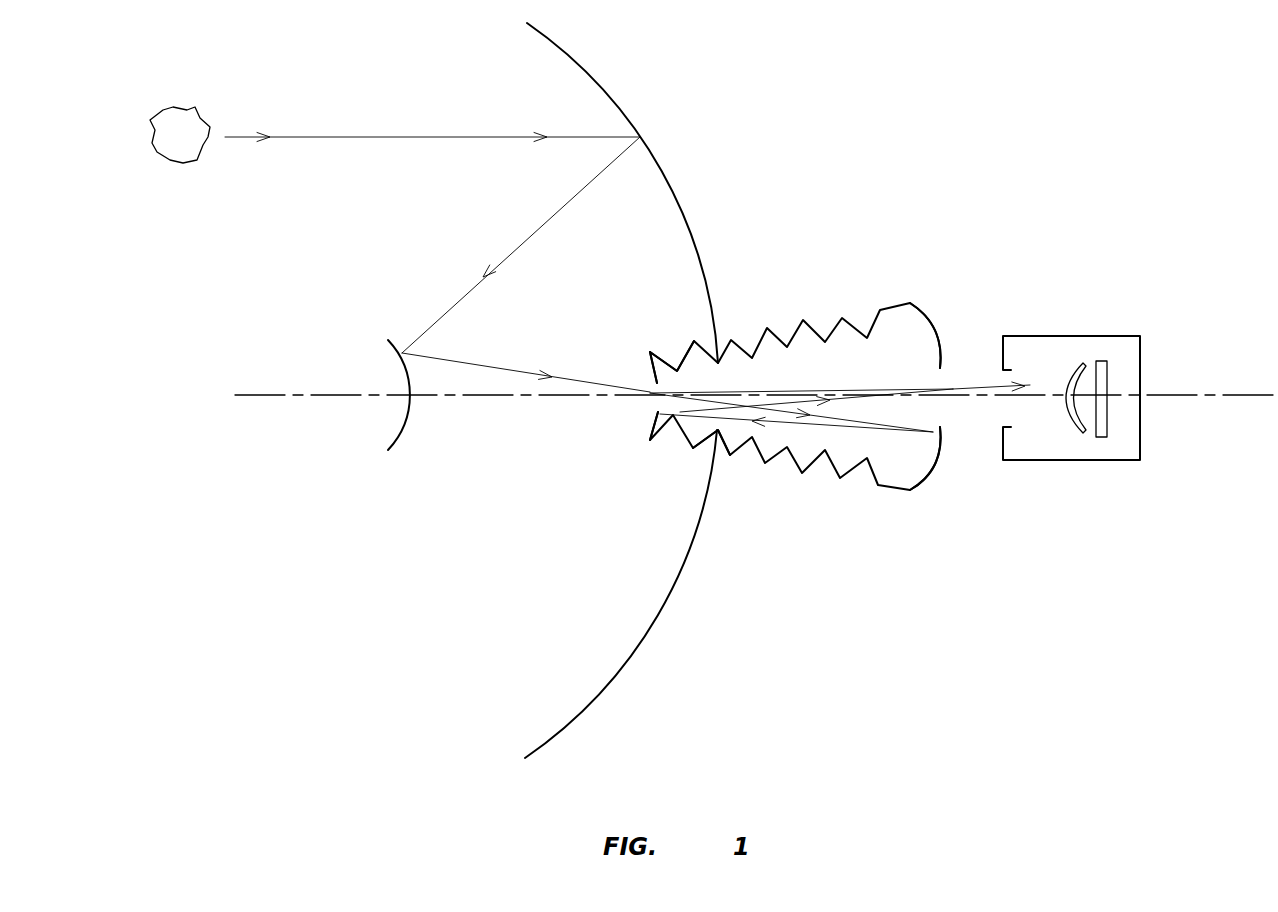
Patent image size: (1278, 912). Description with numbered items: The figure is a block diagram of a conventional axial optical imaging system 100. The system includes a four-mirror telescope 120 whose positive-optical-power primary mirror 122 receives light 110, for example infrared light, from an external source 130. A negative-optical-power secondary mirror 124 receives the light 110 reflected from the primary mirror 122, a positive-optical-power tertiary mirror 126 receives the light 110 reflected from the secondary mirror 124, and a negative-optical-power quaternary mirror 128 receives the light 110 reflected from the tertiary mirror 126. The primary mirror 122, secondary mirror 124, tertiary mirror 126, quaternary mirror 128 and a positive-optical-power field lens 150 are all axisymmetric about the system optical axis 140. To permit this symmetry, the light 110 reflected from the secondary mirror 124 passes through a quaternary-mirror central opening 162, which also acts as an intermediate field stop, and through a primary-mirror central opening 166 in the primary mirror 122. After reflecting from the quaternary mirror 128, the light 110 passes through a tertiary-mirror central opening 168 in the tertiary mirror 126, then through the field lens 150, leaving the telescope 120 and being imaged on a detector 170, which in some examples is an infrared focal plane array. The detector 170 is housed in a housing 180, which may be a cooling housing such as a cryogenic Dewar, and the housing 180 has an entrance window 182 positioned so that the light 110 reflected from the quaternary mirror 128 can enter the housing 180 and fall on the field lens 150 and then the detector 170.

The optical imaging system 100 is at (925, 128).
The light 110 is at (447, 135).
The telescope 120 is at (635, 467).
The primary mirror 122 is at (584, 63).
The secondary mirror 124 is at (395, 445).
The tertiary mirror 126 is at (917, 488).
The quaternary mirror 128 is at (651, 425).
The external source 130 is at (163, 112).
The system optical axis 140 is at (308, 393).
The field lens 150 is at (1072, 378).
The quaternary-mirror central opening 162 is at (654, 383).
The primary-mirror central opening 166 is at (718, 432).
The tertiary-mirror central opening 168 is at (945, 384).
The detector 170 is at (1105, 387).
The housing 180 is at (1141, 335).
The entrance window 182 is at (1002, 412).